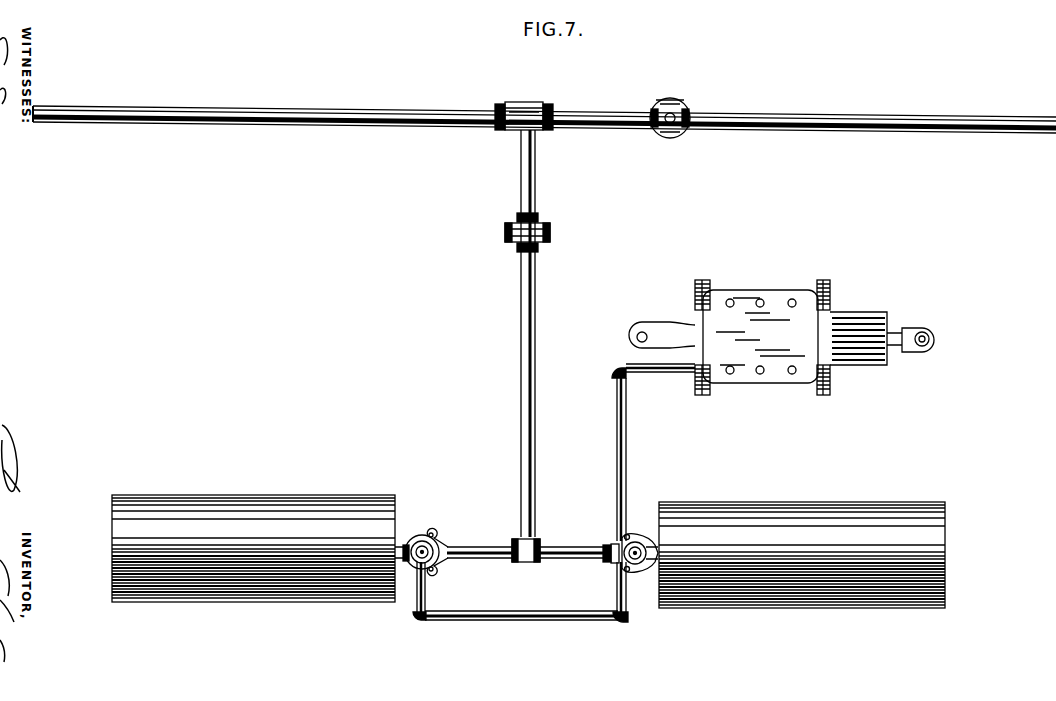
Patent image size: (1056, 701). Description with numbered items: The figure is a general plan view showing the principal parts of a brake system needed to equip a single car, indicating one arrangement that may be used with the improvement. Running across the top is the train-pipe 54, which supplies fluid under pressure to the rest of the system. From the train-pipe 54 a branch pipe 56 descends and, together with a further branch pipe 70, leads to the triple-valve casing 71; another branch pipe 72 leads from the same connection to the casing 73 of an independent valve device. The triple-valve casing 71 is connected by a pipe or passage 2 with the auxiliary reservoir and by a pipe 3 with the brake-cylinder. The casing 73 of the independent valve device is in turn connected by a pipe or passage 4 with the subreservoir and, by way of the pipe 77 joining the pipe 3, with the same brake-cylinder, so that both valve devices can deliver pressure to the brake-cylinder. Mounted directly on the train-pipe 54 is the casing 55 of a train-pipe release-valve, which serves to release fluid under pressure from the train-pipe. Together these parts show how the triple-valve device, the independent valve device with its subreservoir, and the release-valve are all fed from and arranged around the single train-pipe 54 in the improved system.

The pipe or passage 2 is at (645, 545).
The pipe 3 is at (627, 441).
The pipe or passage 4 is at (407, 568).
The train-pipe 54 is at (825, 130).
The casing of a train-pipe release-valve 55 is at (662, 136).
The branch pipe 56 is at (523, 351).
The branch pipe 70 is at (571, 560).
The triple-valve casing 71 is at (640, 572).
The branch pipe 72 is at (466, 549).
The casing of the independent valve device 73 is at (423, 535).
The pipe 77 is at (514, 624).